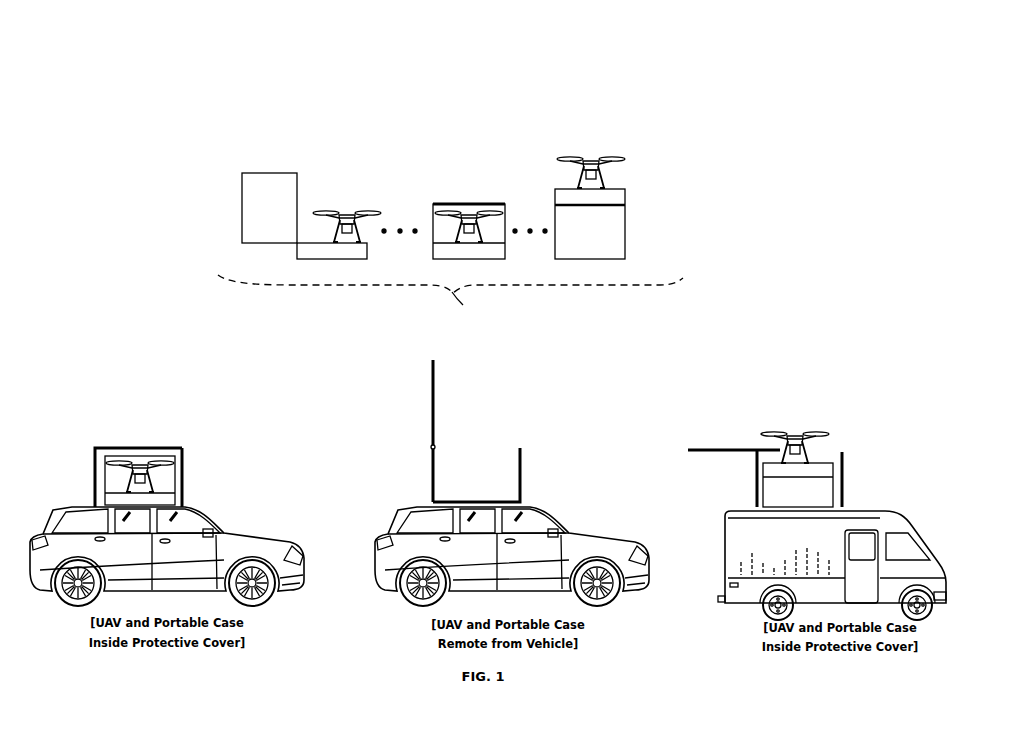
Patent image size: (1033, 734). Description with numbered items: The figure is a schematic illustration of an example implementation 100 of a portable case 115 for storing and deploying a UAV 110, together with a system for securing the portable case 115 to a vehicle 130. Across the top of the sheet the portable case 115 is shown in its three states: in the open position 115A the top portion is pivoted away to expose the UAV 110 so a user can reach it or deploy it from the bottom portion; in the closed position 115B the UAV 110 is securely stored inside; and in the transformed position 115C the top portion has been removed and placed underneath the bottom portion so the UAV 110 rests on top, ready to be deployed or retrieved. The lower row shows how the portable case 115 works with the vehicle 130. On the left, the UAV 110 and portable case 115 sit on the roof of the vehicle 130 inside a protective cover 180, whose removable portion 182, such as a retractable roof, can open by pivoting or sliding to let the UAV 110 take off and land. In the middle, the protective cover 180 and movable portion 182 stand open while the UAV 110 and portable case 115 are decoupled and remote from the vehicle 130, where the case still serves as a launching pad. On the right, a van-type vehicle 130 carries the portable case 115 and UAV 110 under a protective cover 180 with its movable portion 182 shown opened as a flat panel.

The example implementation 100 is at (145, 46).
The UAV 110 is at (796, 432).
The portable case 115 is at (57, 495).
The portable case in open position 115A is at (297, 250).
The portable case in closed position 115B is at (435, 203).
The portable case in transformed position 115C is at (626, 190).
The vehicle 130 is at (900, 458).
The protective cover 180 is at (95, 456).
The removable portion 182 is at (176, 449).